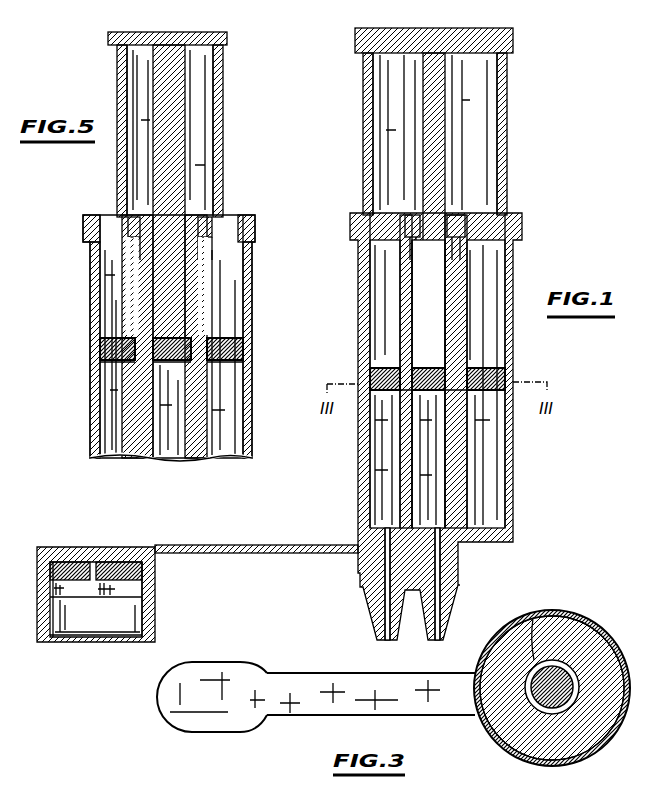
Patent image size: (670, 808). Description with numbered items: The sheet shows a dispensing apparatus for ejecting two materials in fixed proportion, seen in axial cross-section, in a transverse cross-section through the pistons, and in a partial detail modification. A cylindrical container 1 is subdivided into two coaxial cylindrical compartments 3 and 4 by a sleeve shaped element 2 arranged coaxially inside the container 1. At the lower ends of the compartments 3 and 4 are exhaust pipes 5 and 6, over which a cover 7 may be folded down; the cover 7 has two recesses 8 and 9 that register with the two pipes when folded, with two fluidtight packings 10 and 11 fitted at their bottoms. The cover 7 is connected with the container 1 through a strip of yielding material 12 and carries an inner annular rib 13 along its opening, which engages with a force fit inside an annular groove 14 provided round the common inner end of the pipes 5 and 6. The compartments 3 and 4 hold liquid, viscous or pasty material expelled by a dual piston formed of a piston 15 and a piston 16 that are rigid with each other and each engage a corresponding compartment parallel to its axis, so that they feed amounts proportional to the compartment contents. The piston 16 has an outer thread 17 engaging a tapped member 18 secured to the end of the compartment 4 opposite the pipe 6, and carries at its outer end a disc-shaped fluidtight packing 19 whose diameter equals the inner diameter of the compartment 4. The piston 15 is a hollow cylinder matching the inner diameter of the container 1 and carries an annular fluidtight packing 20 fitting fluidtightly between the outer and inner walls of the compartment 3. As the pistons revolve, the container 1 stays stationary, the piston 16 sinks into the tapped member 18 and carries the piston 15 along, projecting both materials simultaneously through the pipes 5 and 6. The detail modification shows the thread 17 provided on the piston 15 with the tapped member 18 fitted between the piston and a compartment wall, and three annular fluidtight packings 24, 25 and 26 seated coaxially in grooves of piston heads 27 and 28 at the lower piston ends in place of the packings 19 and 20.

In FIG. 5, the cylindrical container 1 is at (240, 434).
In FIG. 1, the cylindrical container 1 is at (507, 488).
In FIG. 3, the cylindrical container 1 is at (566, 612).
In FIG. 5, the sleeve shaped element 2 is at (200, 438).
In FIG. 1, the sleeve shaped element 2 is at (410, 478).
In FIG. 3, the sleeve shaped element 2 is at (533, 618).
In FIG. 1, the compartment 3 is at (487, 437).
In FIG. 1, the compartment 4 is at (430, 432).
In FIG. 1, the exhaust pipe 5 is at (378, 613).
In FIG. 1, the exhaust pipe 6 is at (446, 616).
In FIG. 1, the cover 7 is at (100, 547).
In FIG. 3, the cover 7 is at (213, 718).
In FIG. 1, the recess 8 is at (122, 586).
In FIG. 1, the recess 9 is at (60, 588).
In FIG. 1, the fluidtight packing 10 is at (135, 562).
In FIG. 1, the fluidtight packing 11 is at (70, 562).
In FIG. 1, the strip of yielding material 12 is at (290, 545).
In FIG. 3, the strip of yielding material 12 is at (350, 683).
In FIG. 1, the inner annular rib 13 is at (143, 642).
In FIG. 1, the annular groove 14 is at (460, 572).
In FIG. 5, the piston 15 is at (217, 99).
In FIG. 1, the piston 15 is at (507, 131).
In FIG. 5, the piston 16 is at (170, 78).
In FIG. 1, the piston 16 is at (436, 131).
In FIG. 5, the outer thread 17 is at (207, 205).
In FIG. 1, the outer thread 17 is at (453, 205).
In FIG. 5, the tapped member 18 is at (210, 214).
In FIG. 1, the tapped member 18 is at (463, 214).
In FIG. 1, the disc-shaped fluidtight packing 19 is at (447, 392).
In FIG. 3, the disc-shaped fluidtight packing 19 is at (551, 700).
In FIG. 1, the annular fluidtight packing 20 is at (480, 366).
In FIG. 3, the annular fluidtight packing 20 is at (609, 740).
In FIG. 5, the annular fluidtight packing 24 is at (245, 349).
In FIG. 5, the annular fluidtight packing 25 is at (225, 370).
In FIG. 5, the annular fluidtight packing 26 is at (173, 374).
In FIG. 5, the piston head 27 is at (103, 362).
In FIG. 5, the piston head 28 is at (165, 365).